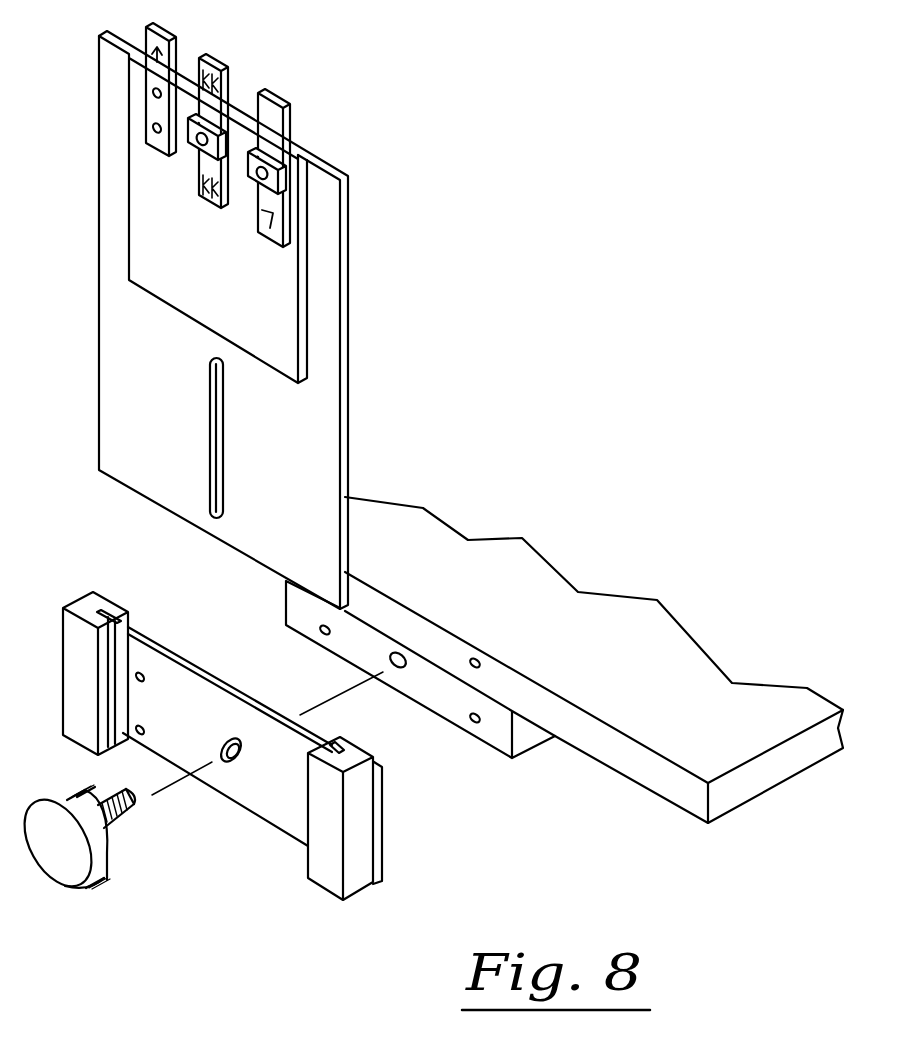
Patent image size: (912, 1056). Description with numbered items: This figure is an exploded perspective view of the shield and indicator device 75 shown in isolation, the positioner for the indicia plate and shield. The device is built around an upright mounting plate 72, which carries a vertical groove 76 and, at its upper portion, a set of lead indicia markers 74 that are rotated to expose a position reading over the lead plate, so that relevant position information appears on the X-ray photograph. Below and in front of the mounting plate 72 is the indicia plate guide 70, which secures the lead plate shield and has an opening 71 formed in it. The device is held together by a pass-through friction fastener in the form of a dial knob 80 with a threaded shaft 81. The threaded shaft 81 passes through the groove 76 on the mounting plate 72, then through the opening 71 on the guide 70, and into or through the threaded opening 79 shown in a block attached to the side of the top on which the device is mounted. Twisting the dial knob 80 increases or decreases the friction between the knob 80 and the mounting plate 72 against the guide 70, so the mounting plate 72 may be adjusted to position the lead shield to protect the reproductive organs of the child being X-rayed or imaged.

The indicia plate guide 70 is at (594, 687).
The opening 71 is at (230, 767).
The mounting plate 72 is at (318, 432).
The lead indicia markers 74 is at (284, 123).
The shield and indicator device 75 is at (292, 61).
The groove 76 is at (213, 432).
The threaded opening 79 is at (403, 652).
The dial knob 80 is at (77, 877).
The threaded shaft 81 is at (130, 823).